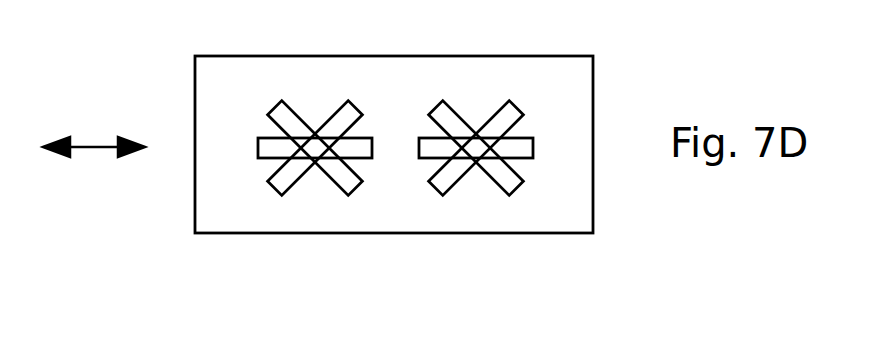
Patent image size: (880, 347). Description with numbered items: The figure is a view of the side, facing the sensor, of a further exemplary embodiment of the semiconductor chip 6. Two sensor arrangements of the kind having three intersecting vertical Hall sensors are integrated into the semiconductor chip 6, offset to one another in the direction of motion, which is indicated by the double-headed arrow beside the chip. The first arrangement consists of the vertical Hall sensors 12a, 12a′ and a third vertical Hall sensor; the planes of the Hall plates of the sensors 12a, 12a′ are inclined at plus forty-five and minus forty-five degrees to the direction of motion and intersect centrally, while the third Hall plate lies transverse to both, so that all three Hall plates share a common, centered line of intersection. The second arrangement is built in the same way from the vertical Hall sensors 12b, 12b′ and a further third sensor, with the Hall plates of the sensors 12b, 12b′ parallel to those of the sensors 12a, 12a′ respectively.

The semiconductor chip 6 is at (405, 215).
The vertical Hall sensor 12a is at (284, 178).
The vertical Hall sensor 12a′ is at (285, 117).
The vertical Hall sensor 12b is at (505, 182).
The vertical Hall sensor 12b′ is at (505, 118).